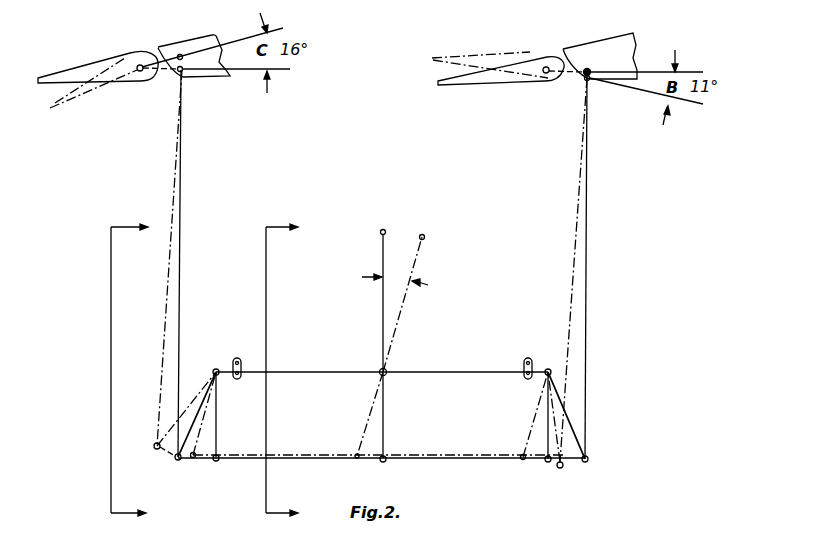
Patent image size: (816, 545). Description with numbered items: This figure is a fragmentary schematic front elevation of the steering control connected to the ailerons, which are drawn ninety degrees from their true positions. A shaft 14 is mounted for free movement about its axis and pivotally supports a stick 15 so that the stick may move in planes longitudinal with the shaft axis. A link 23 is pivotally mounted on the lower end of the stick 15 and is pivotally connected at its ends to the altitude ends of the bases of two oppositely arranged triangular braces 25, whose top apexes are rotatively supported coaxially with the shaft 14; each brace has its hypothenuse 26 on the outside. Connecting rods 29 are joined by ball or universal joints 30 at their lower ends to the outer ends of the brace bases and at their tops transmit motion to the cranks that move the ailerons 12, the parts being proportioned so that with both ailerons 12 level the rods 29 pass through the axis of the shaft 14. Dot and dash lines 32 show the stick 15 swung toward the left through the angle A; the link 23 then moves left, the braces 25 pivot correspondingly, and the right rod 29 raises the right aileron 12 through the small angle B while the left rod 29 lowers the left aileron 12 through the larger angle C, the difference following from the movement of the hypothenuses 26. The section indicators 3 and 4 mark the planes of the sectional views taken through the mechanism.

The aileron 12 is at (75, 70).
The connecting rod 29 is at (182, 260).
The shaft 14 is at (437, 371).
The link 23 is at (282, 460).
The stick 15 is at (383, 438).
The dot and dash lines 32 is at (417, 260).
The triangular brace 25 is at (198, 410).
The hypothenuse 26 is at (192, 430).
The universal joint 30 is at (178, 460).
The section line 3- 3 is at (293, 370).
The section line 4- 4 is at (138, 370).